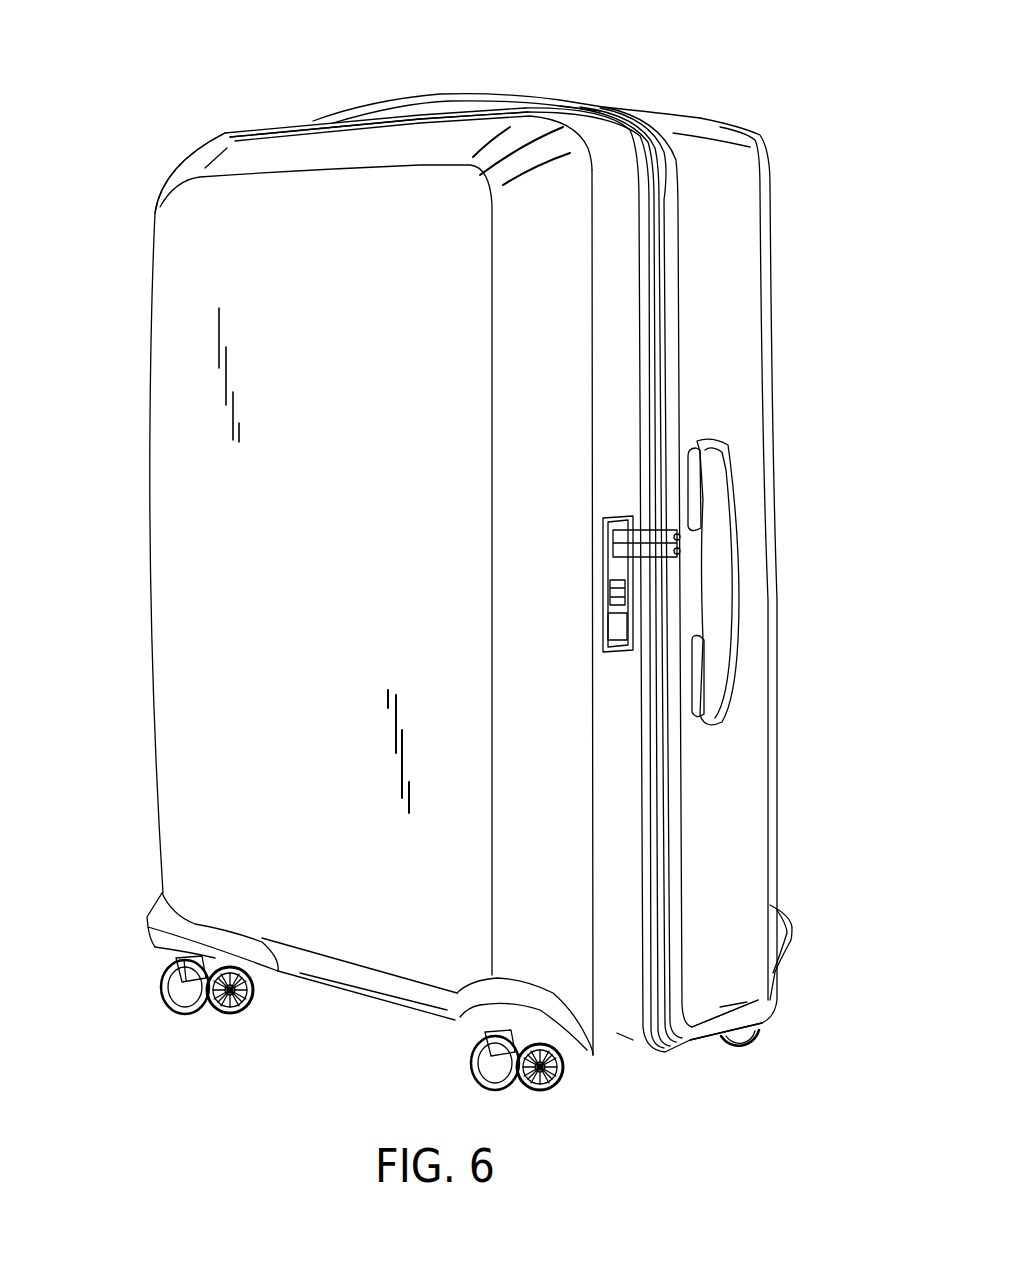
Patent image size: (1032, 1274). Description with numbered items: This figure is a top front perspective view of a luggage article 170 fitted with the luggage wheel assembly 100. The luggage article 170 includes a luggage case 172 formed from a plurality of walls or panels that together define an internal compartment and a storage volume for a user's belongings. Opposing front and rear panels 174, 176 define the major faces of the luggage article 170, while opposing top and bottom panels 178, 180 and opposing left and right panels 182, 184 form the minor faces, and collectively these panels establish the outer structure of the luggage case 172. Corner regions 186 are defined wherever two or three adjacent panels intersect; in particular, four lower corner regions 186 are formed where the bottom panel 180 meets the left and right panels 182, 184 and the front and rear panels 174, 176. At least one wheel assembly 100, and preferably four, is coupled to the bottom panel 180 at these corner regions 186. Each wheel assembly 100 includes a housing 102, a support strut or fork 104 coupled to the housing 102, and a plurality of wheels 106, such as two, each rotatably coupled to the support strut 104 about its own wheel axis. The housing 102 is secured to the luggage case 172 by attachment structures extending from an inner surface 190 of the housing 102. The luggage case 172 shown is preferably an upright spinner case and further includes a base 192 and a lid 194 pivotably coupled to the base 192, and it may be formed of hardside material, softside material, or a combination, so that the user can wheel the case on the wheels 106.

The luggage wheel assembly 100 is at (147, 917).
The housing 102 is at (162, 965).
The support strut or fork 104 is at (176, 977).
The wheels 106 is at (213, 1012).
The luggage article 170 is at (718, 54).
The luggage case 172 is at (745, 237).
The front panel 174 is at (175, 346).
The rear panel 176 is at (829, 648).
The top panel 178 is at (333, 121).
The bottom panel 180 is at (370, 998).
The left panel 182 is at (115, 475).
The right panel 184 is at (755, 400).
The corner regions 186 is at (188, 902).
The inner surface 190 is at (760, 812).
The base 192 is at (167, 217).
The lid 194 is at (535, 94).